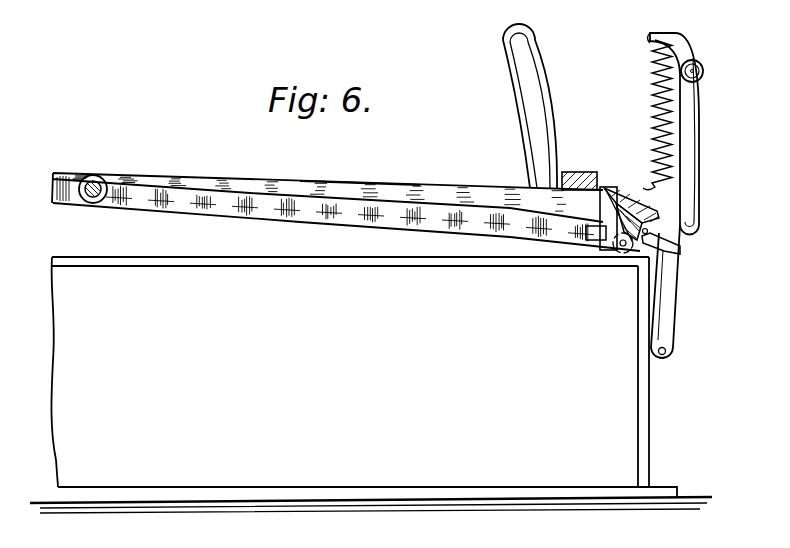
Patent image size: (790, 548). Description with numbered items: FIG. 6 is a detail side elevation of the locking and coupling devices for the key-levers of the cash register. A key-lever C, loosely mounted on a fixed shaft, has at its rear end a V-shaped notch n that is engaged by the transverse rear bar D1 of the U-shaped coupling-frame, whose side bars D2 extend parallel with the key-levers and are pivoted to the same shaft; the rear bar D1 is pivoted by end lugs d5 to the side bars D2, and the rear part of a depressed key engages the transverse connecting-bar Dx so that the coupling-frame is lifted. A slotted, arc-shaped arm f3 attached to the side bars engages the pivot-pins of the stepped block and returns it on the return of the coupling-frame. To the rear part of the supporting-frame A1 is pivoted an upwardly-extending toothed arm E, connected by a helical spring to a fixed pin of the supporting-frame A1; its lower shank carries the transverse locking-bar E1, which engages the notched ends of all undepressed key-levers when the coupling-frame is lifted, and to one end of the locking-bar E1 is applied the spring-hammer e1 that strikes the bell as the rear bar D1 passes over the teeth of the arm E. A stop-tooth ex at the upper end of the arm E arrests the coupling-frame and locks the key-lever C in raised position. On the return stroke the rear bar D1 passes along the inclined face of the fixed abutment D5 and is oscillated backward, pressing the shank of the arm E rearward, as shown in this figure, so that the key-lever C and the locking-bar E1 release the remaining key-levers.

The key-lever C is at (263, 218).
The rear bar of the coupling-frame D1 is at (345, 181).
The transverse connecting-bar of the coupling-frame Dx is at (558, 166).
The fixed abutment D5 is at (608, 187).
The side bar of the coupling-frame D2 is at (607, 192).
The slotted arc-shaped arm f3 is at (561, 99).
The stop-tooth ex is at (656, 101).
The spring-hammer e1 is at (701, 78).
The toothed arm E is at (676, 137).
The end lug d5 is at (647, 230).
The transverse locking-bar E1 is at (668, 246).
The V-shaped notch n is at (596, 241).
The supporting-frame A1 is at (650, 393).